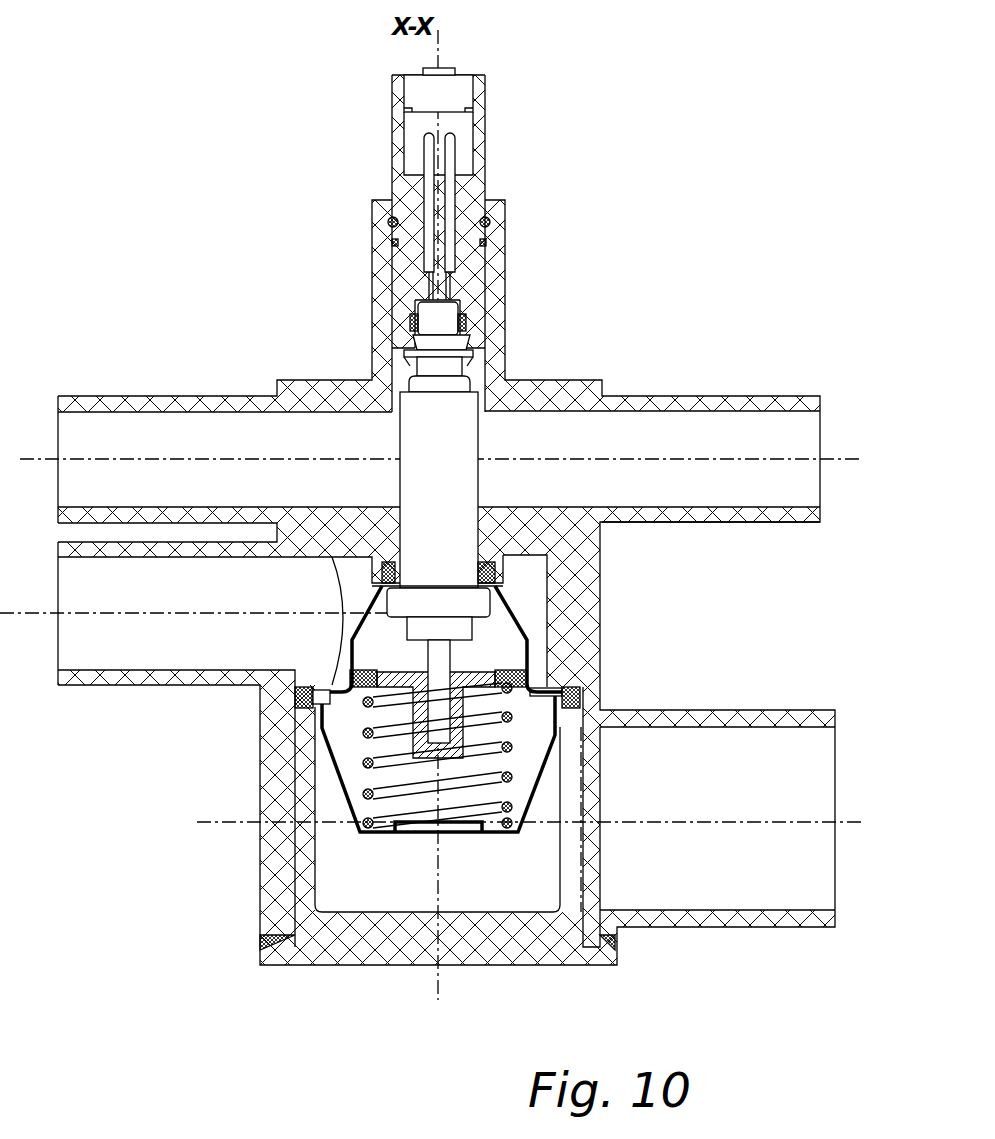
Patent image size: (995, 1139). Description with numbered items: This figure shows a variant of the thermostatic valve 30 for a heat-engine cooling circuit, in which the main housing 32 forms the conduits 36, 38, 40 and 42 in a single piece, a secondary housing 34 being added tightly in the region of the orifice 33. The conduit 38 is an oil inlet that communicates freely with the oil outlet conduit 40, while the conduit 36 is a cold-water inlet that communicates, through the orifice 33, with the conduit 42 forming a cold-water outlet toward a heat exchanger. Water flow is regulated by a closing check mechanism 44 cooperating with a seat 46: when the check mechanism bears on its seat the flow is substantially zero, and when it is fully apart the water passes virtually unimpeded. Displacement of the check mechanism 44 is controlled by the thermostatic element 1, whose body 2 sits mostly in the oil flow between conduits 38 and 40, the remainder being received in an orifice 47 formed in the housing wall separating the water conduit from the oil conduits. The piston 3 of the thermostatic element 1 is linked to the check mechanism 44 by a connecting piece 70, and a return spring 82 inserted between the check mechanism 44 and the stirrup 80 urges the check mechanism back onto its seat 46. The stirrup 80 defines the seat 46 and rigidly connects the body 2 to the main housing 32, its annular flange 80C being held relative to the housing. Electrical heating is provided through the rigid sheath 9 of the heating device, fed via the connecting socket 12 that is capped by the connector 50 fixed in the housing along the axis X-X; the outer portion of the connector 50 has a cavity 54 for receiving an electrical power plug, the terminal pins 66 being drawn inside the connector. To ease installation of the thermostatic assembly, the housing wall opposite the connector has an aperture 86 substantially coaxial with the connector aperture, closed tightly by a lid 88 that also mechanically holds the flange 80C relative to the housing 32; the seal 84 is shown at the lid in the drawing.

The thermostatic valve 30 is at (431, 524).
The cavity 54 is at (455, 90).
The connector 50 is at (466, 186).
The terminal pins 66 is at (428, 163).
The electrical connecting socket 12 is at (448, 323).
The rigid sheath 9 is at (428, 372).
The orifice 47 is at (403, 522).
The thermostatic element 1 is at (490, 447).
The body 2 is at (468, 486).
The conduit 38 is at (167, 459).
The conduit 40 is at (711, 459).
The conduit 36 is at (215, 613).
The conduit 42 is at (717, 818).
The main housing 32 is at (585, 582).
The stirrup 80 is at (519, 616).
The annular flange 80C is at (545, 670).
The secondary housing 34 is at (782, 712).
The connecting piece 70 is at (416, 676).
The piston 3 is at (455, 686).
The seat 46 is at (335, 652).
The closing check mechanism 44 is at (335, 735).
The orifice 33 is at (530, 760).
The return spring 82 is at (525, 800).
The lower seal 84 is at (592, 912).
The aperture 86 is at (290, 915).
The lid 88 is at (452, 945).